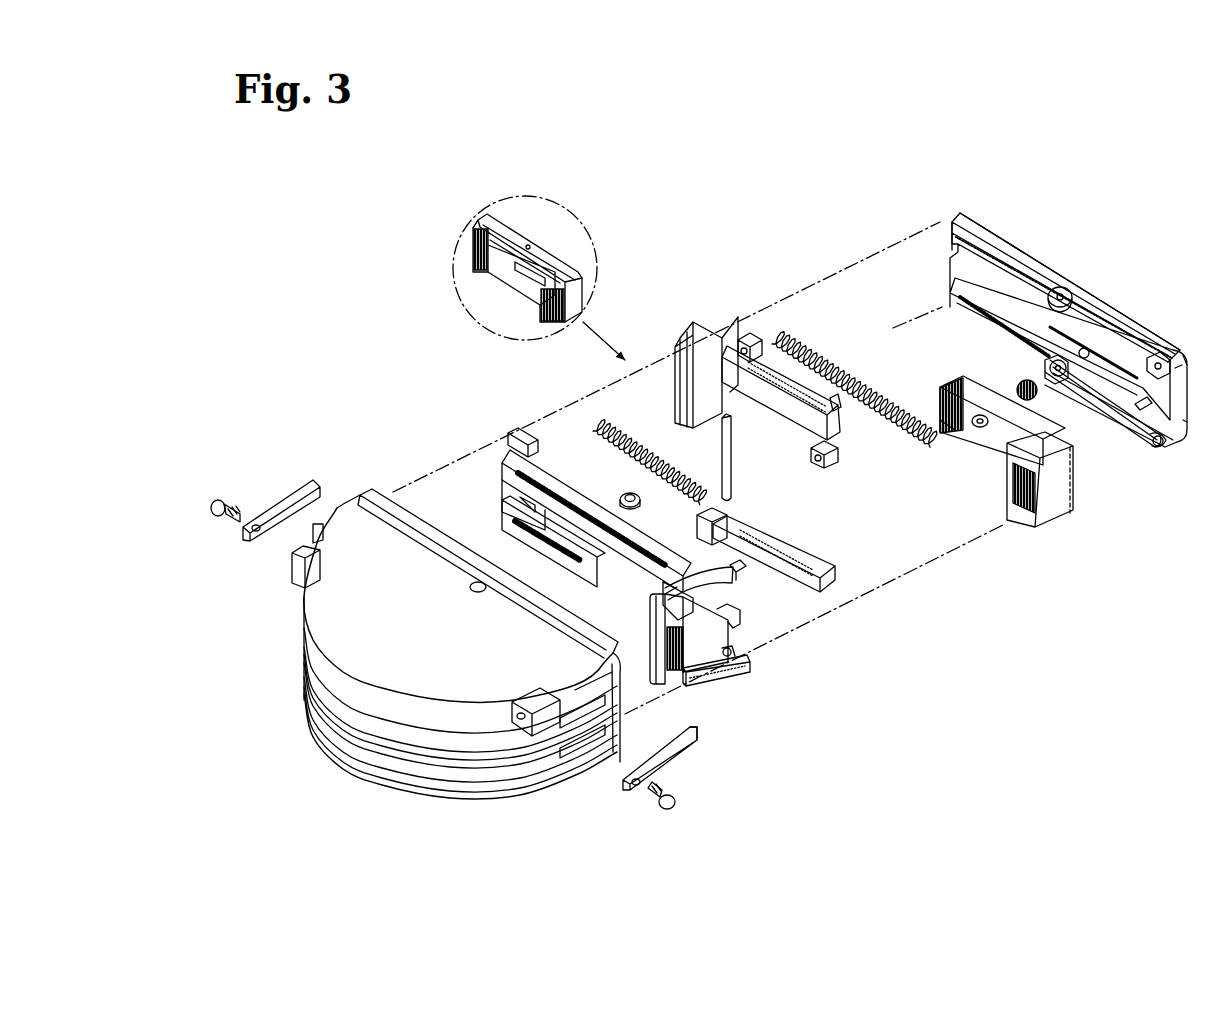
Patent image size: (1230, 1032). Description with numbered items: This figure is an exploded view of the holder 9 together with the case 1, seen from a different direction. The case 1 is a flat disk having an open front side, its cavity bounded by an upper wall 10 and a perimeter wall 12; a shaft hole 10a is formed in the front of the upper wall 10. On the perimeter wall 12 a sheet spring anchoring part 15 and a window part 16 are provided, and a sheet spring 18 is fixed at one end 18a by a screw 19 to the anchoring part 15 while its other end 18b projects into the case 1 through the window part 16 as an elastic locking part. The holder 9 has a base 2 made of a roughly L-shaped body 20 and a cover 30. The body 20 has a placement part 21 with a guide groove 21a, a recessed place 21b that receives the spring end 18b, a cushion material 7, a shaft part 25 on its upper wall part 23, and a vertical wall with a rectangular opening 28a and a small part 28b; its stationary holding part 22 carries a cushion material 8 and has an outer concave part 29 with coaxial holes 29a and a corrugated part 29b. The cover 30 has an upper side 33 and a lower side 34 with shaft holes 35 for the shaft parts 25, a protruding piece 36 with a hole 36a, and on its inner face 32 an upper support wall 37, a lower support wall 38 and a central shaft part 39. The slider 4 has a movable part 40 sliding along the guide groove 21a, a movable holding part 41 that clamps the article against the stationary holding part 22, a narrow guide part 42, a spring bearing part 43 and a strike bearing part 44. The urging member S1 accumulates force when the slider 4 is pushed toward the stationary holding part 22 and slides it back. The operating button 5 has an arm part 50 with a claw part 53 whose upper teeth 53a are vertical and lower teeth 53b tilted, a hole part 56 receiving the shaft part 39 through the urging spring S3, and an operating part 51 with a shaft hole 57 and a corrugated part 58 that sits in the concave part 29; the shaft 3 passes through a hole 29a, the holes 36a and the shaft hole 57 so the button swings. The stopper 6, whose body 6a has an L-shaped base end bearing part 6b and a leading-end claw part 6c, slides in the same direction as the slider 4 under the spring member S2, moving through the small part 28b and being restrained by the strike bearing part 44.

The case 1 is at (449, 666).
The base 2 is at (604, 550).
The shaft 3 is at (721, 468).
The slider 4 is at (755, 388).
The operating button 5 is at (1045, 498).
The stopper 6 is at (794, 562).
The body 6a is at (777, 540).
The base end bearing part 6b is at (697, 518).
The leading-end claw part 6c is at (794, 562).
The cushion material 7 is at (535, 553).
The cushion material 8 is at (718, 400).
The holder 9 is at (486, 284).
The upper wall 10 is at (433, 625).
The shaft hole 10a is at (478, 582).
The perimeter wall 12 is at (340, 732).
The sheet spring anchoring part 15 is at (292, 556).
The window part 16 is at (620, 706).
The sheet spring 18 is at (290, 487).
The one end 18a is at (637, 790).
The other end 18b is at (695, 729).
The screw 19 is at (220, 499).
The body 20 is at (485, 229).
The placement part 21 is at (590, 506).
The upper wall part 23 is at (545, 455).
The guide groove 21a is at (502, 494).
The recessed place 21b is at (510, 436).
The stationary holding part 22 is at (682, 674).
The shaft part 25 is at (627, 495).
The rectangular opening 28a is at (742, 616).
The small part 28b is at (745, 660).
The concave part 29 is at (705, 681).
The holes 29a is at (740, 572).
The corrugated part 29b is at (652, 641).
The cover 30 is at (548, 272).
The inner face 32 is at (1180, 372).
The upper side 33 is at (1002, 233).
The lower side 34 is at (1105, 400).
The shaft hole 35 is at (1066, 288).
The protruding piece 36 is at (1167, 444).
The hole 36a is at (1158, 352).
The upper support wall 37 is at (950, 265).
The lower support wall 38 is at (1105, 420).
The shaft part 39 is at (1087, 347).
The movable part 40 is at (786, 420).
The movable holding part 41 is at (685, 330).
The guide part 42 is at (838, 406).
The spring bearing part 43 is at (747, 335).
The strike bearing part 44 is at (815, 467).
The arm part 50 is at (975, 388).
The operating part 51 is at (1046, 524).
The claw part 53 is at (877, 385).
The upper teeth 53a is at (935, 390).
The lower teeth 53b is at (920, 400).
The hole part 56 is at (980, 428).
The shaft hole 57 is at (1050, 437).
The corrugated part 58 is at (1012, 497).
The urging member S1 is at (805, 340).
The spring member S2 is at (614, 428).
The urging spring S3 is at (1019, 381).